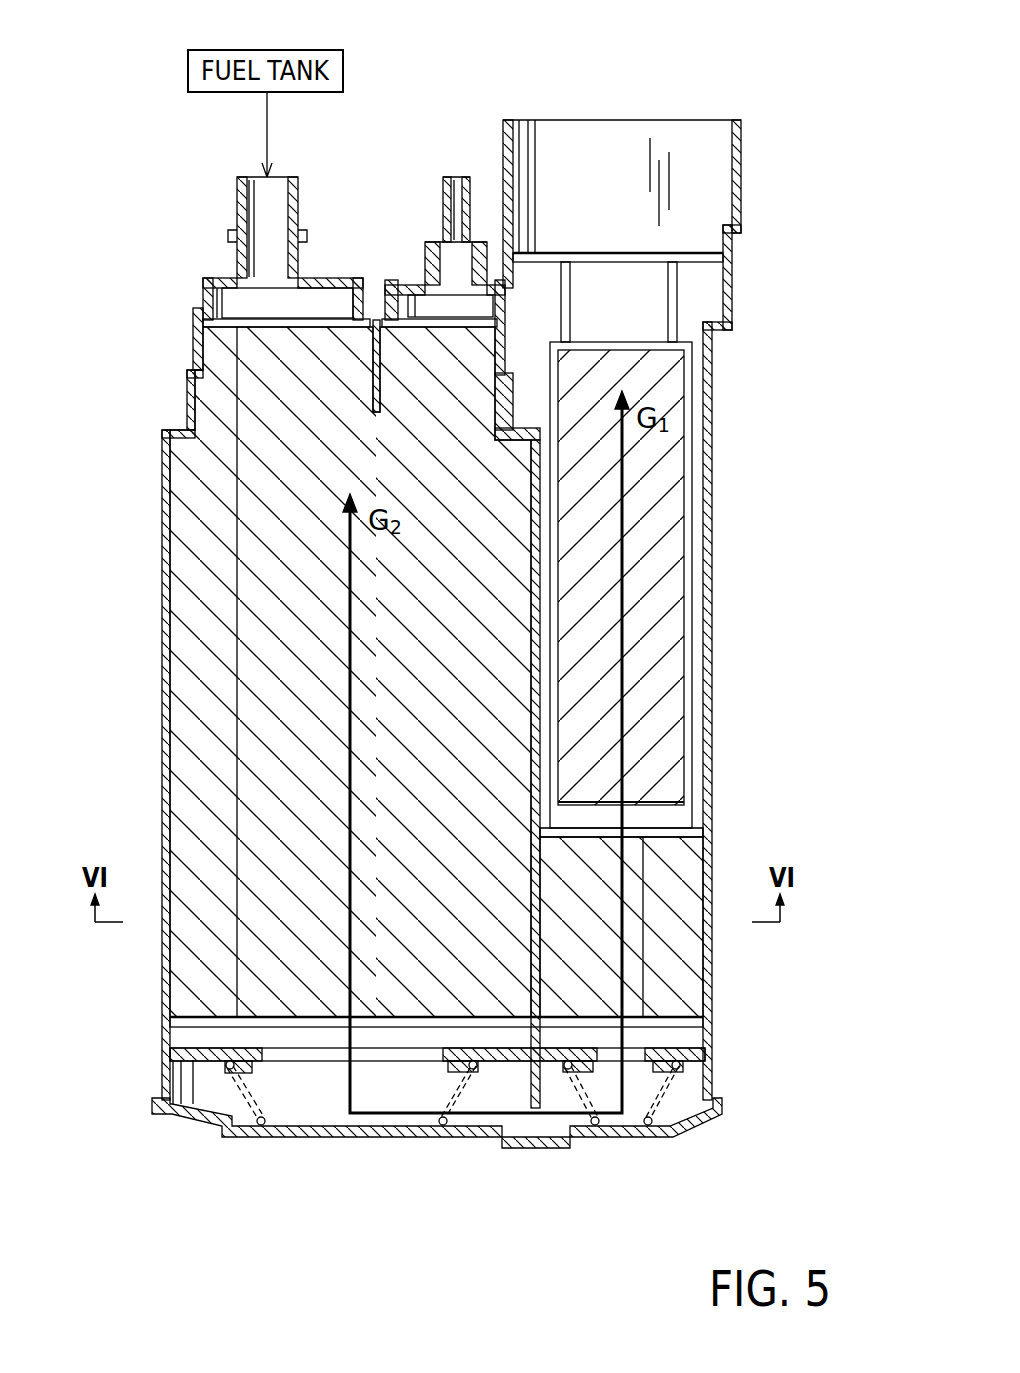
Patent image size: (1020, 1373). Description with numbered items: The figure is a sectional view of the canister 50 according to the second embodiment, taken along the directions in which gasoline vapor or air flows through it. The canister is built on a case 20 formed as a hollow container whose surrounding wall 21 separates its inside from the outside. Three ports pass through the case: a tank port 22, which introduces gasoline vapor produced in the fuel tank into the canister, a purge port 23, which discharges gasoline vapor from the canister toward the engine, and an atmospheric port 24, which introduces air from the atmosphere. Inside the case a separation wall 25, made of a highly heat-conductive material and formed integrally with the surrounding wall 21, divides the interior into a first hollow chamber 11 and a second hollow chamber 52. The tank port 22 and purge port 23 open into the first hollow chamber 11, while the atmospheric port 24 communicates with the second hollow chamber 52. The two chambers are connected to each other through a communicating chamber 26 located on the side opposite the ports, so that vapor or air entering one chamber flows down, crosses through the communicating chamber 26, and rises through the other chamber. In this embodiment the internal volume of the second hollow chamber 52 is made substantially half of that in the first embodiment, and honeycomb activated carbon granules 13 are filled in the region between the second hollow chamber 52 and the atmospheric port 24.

The first hollow chamber 11 is at (217, 582).
The honeycomb activated carbon granules 13 is at (676, 626).
The case 20 is at (395, 713).
The surrounding wall 21 is at (165, 735).
The tank port 22 is at (258, 177).
The purge port 23 is at (456, 177).
The atmospheric port 24 is at (608, 255).
The separation wall 25 is at (540, 980).
The communicating chamber 26 is at (688, 1087).
The canister 50 is at (684, 104).
The second hollow chamber 52 is at (688, 868).